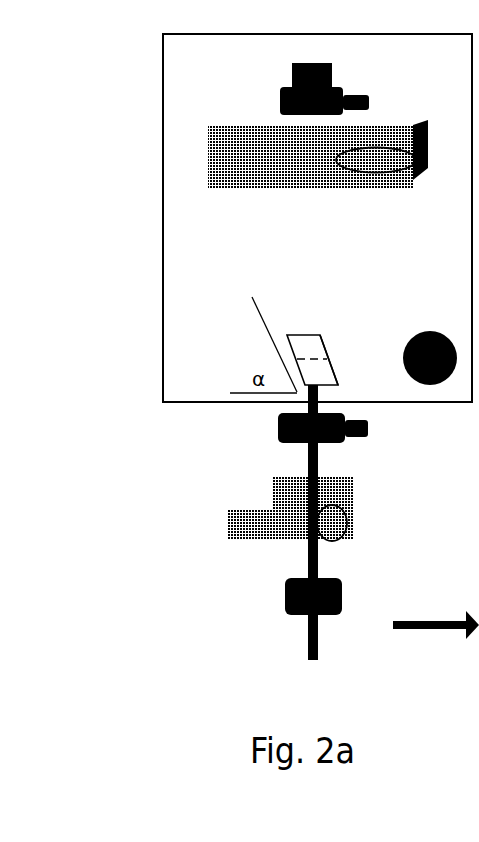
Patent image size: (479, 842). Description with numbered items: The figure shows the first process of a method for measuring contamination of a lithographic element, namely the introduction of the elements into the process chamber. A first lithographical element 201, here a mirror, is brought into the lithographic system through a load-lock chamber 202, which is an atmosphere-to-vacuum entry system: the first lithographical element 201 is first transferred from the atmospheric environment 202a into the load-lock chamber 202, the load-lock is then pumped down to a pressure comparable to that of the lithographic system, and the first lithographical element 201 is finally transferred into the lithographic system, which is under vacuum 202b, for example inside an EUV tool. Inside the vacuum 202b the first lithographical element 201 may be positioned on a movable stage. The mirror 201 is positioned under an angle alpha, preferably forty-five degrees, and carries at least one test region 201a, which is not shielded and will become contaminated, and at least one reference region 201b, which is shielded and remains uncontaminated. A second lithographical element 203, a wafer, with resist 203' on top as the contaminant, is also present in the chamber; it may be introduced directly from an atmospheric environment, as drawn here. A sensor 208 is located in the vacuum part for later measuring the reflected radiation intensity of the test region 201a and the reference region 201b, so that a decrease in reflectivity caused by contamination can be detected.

The first lithographical element 201 is at (313, 350).
The test region 201a is at (353, 359).
The reference region 201b is at (346, 373).
The load-lock chamber 202 is at (210, 408).
The atmospheric environment 202a is at (220, 627).
The vacuum 202b is at (153, 40).
The second lithographical element 203 is at (389, 194).
The resist 203' is at (328, 199).
The sensor 208 is at (328, 84).